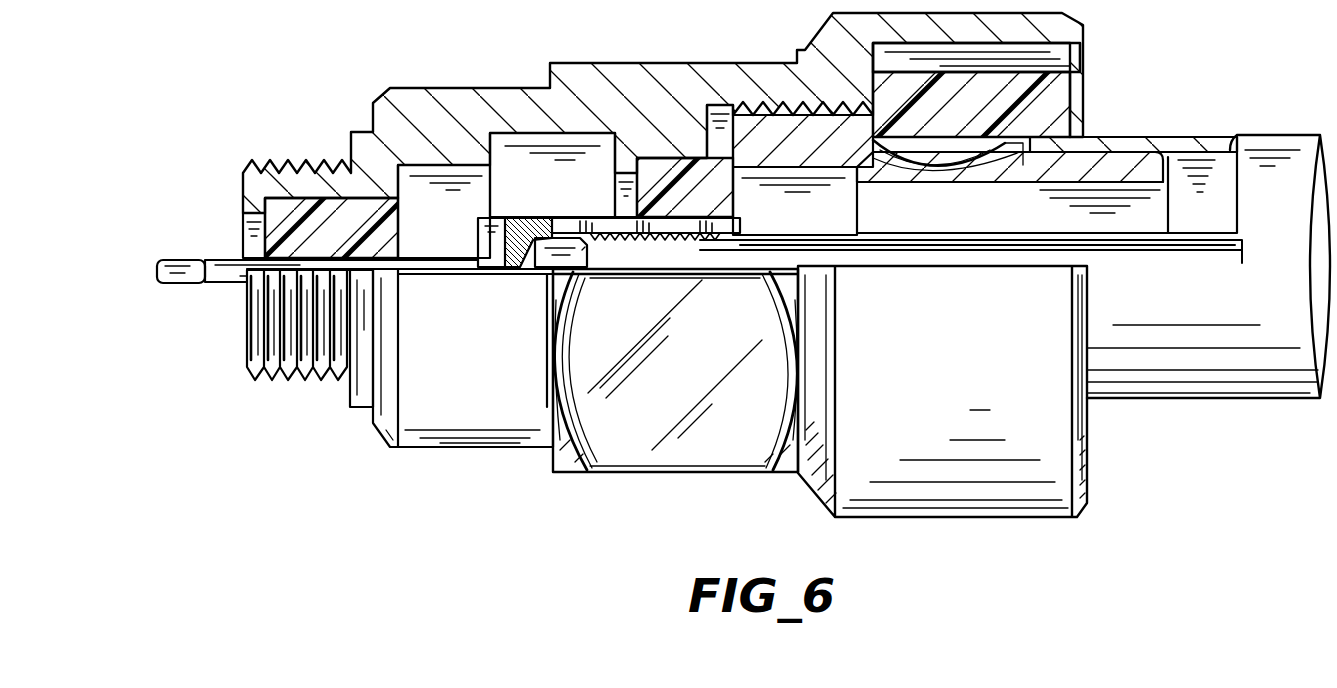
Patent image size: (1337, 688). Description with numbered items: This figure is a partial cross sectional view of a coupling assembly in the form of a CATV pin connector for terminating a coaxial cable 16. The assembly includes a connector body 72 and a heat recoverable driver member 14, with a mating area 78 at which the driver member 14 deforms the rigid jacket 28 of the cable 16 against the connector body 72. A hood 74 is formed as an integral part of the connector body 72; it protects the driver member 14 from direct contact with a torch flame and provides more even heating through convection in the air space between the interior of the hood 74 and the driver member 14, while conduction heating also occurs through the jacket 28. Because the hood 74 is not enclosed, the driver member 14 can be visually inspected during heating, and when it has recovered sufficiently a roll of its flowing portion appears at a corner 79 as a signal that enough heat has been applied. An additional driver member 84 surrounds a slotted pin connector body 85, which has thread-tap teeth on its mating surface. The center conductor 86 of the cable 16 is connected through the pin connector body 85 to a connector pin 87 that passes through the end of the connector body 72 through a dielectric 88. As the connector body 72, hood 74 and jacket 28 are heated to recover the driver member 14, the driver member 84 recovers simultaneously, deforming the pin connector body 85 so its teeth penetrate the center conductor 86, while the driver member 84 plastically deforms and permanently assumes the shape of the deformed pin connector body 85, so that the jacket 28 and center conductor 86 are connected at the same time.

The driver member 14 is at (887, 95).
The coaxial cable 16 is at (1220, 335).
The jacket 28 is at (1203, 145).
The connector body 72 is at (607, 473).
The hood 74 is at (1042, 442).
The mating area 78 is at (1003, 137).
The corner 79 is at (1042, 137).
The driver member 84 is at (650, 170).
The pin connector body 85 is at (667, 223).
The center conductor 86 is at (722, 250).
The connector pin 87 is at (185, 273).
The dielectric 88 is at (293, 213).